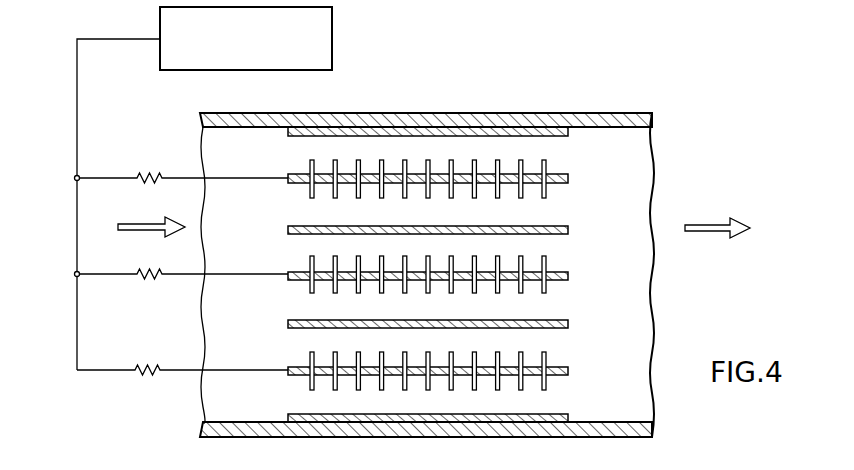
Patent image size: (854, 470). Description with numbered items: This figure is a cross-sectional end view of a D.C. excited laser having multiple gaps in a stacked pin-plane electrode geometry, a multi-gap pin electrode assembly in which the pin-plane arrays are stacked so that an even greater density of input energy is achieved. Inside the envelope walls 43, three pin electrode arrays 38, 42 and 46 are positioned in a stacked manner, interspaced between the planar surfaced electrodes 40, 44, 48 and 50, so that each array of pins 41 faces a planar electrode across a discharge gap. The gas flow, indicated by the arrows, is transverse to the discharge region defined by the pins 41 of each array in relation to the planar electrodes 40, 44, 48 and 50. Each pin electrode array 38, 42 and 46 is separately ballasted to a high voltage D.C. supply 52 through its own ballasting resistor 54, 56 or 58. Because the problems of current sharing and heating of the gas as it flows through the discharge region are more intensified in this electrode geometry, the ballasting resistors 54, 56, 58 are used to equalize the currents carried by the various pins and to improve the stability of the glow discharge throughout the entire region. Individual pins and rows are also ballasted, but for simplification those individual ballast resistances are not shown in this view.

The pin electrode array 38 is at (568, 369).
The planar surfaced electrode 40 is at (568, 322).
The pins 41 is at (300, 206).
The pin electrode array 42 is at (568, 276).
The envelope walls 43 is at (476, 113).
The planar surfaced electrode 44 is at (568, 228).
The pin electrode array 46 is at (568, 180).
The planar surfaced electrode 48 is at (568, 136).
The planar surfaced electrode 50 is at (566, 414).
The high voltage D.C. supply 52 is at (332, 20).
The ballasting resistor 54 is at (147, 362).
The ballasting resistor 56 is at (148, 279).
The ballasting resistor 58 is at (148, 173).